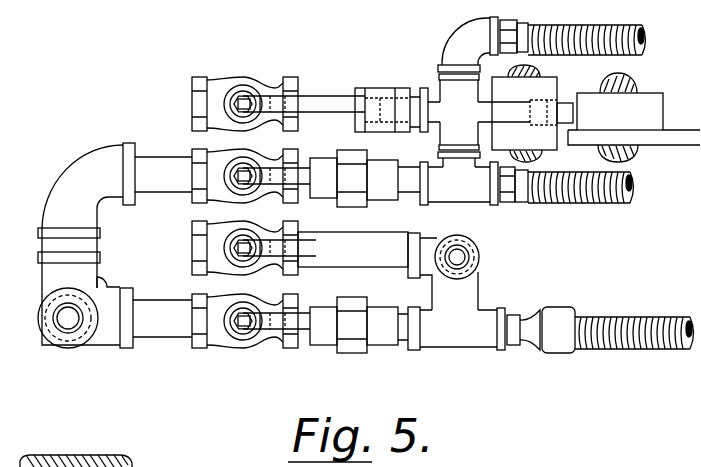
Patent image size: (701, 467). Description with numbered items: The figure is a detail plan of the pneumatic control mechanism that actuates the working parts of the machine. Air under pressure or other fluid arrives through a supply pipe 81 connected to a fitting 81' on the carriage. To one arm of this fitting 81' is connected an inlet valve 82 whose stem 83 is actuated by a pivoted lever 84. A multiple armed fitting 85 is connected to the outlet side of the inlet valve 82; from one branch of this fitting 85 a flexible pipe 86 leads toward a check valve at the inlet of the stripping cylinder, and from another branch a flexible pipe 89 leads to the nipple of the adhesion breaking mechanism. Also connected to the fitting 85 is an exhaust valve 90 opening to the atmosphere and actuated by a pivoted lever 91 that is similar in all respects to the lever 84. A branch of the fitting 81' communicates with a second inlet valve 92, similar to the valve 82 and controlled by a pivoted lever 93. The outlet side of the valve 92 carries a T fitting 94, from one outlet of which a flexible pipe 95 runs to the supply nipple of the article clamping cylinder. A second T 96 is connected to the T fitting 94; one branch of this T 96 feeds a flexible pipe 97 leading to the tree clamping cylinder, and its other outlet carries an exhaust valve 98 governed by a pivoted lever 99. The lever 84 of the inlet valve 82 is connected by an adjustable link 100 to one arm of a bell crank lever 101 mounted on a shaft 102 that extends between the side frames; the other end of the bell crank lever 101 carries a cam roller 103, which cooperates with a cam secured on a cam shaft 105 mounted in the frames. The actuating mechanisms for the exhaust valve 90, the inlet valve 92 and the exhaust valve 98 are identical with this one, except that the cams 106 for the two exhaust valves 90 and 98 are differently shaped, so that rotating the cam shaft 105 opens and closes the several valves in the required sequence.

The supply pipe 81 is at (55, 322).
The fitting 81' is at (117, 304).
The inlet valve 82 is at (213, 338).
The stem 83 is at (251, 334).
The pivoted lever 84 is at (327, 330).
The multiple armed fitting 85 is at (472, 312).
The flexible pipe 86 is at (627, 320).
The flexible pipe 89 is at (467, 256).
The exhaust valve 90 is at (277, 273).
The pivoted lever 91 is at (372, 252).
The second inlet valve 92 is at (208, 158).
The pivoted lever 93 is at (323, 176).
The T fitting 94 is at (462, 196).
The flexible pipe 95 is at (592, 194).
The second T 96 is at (446, 90).
The flexible pipe 97 is at (623, 33).
The exhaust valve 98 is at (276, 82).
The pivoted lever 99 is at (323, 107).
The adjustable link 100 is at (386, 128).
The bell crank lever 101 is at (465, 118).
The shaft 102 is at (541, 72).
The cam roller 103 is at (556, 142).
The cam shaft 105 is at (634, 90).
The cams 106 is at (683, 144).